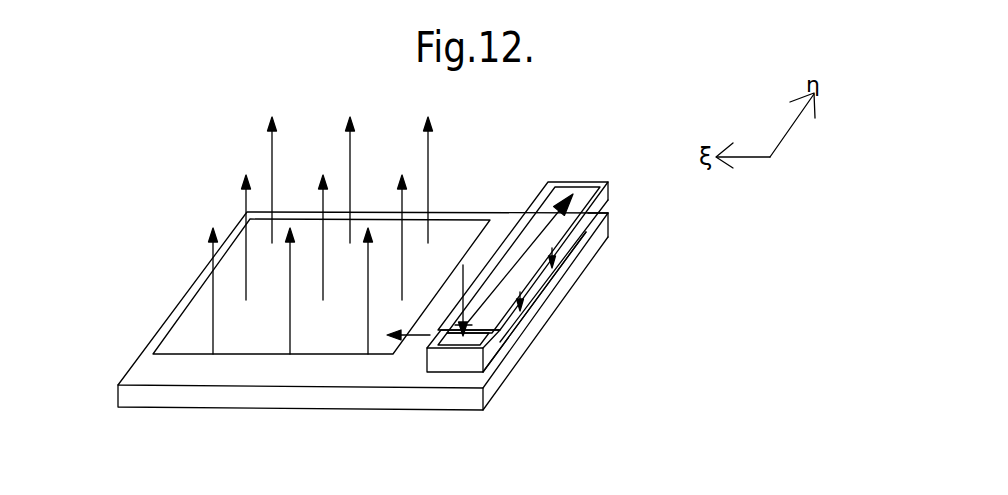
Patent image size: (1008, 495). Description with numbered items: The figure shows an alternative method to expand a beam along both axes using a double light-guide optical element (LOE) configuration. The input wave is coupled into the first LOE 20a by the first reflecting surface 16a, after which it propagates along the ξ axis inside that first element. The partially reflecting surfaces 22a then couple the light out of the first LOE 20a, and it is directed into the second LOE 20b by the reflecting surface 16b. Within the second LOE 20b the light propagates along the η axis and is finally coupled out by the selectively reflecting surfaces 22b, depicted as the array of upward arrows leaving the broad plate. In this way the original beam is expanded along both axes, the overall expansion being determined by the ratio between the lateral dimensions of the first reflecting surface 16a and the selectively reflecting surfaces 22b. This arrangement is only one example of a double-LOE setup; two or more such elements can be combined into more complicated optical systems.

The second LOE 20b is at (152, 370).
The selectively reflecting surfaces 22b is at (236, 268).
The first reflecting surface 16a is at (490, 341).
The reflecting surface 16b is at (537, 303).
The first LOE 20a is at (596, 205).
The partially reflecting surfaces 22a is at (512, 257).